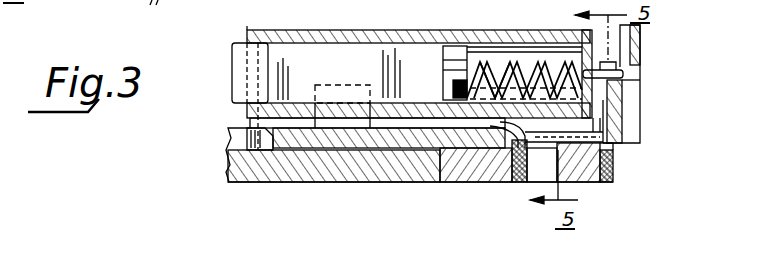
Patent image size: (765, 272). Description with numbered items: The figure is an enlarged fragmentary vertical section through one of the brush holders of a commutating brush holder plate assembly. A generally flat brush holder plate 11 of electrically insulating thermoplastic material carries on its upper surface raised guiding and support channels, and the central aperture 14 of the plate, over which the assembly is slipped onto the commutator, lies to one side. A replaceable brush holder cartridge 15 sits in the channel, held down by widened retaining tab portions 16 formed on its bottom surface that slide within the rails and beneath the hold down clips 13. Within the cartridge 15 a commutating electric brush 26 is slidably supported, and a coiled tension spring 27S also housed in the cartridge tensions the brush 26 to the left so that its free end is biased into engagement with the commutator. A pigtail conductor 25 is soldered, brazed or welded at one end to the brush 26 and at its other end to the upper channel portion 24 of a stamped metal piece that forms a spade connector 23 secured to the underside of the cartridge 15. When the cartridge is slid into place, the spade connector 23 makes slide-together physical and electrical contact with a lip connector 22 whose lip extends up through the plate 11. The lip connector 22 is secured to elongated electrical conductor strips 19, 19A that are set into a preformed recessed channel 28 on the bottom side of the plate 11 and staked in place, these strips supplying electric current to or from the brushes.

The brush holder plate 11 is at (456, 186).
The hold down clip 13 is at (349, 85).
The central aperture 14 is at (250, 143).
The brush holder cartridge 15 is at (393, 31).
The retaining tab portion 16 is at (421, 102).
The electrical conductor strip 19 is at (520, 184).
The electrical conductor strip 19A is at (614, 170).
The lip connector 22 is at (503, 134).
The spade connector 23 is at (610, 147).
The upper channel portion 24 is at (639, 44).
The pigtail conductor 25 is at (548, 63).
The commutating electric brush 26 is at (238, 68).
The coiled tension spring 27S is at (500, 63).
The recessed channel 28 is at (604, 184).